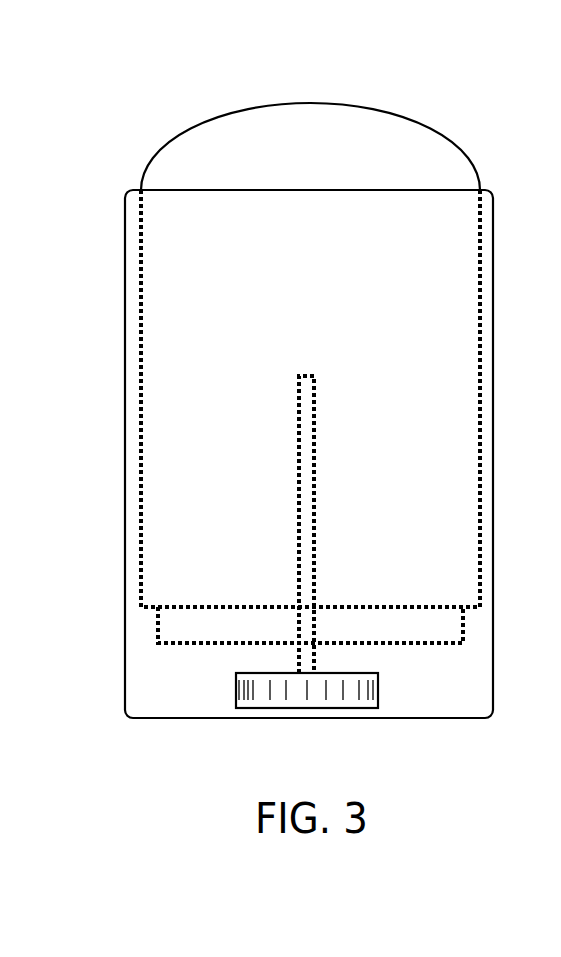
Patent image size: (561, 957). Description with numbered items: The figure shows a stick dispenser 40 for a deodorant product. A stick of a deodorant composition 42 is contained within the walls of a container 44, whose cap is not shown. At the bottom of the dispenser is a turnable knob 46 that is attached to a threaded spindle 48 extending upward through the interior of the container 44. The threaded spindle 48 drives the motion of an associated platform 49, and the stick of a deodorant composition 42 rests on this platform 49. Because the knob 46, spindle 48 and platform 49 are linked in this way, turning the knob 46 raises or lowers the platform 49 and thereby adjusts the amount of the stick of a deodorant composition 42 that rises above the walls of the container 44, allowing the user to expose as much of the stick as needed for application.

The stick dispenser 40 is at (198, 143).
The stick of a deodorant composition 42 is at (167, 173).
The container 44 is at (128, 243).
The turnable knob 46 is at (258, 684).
The threaded spindle 48 is at (305, 483).
The platform 49 is at (170, 628).